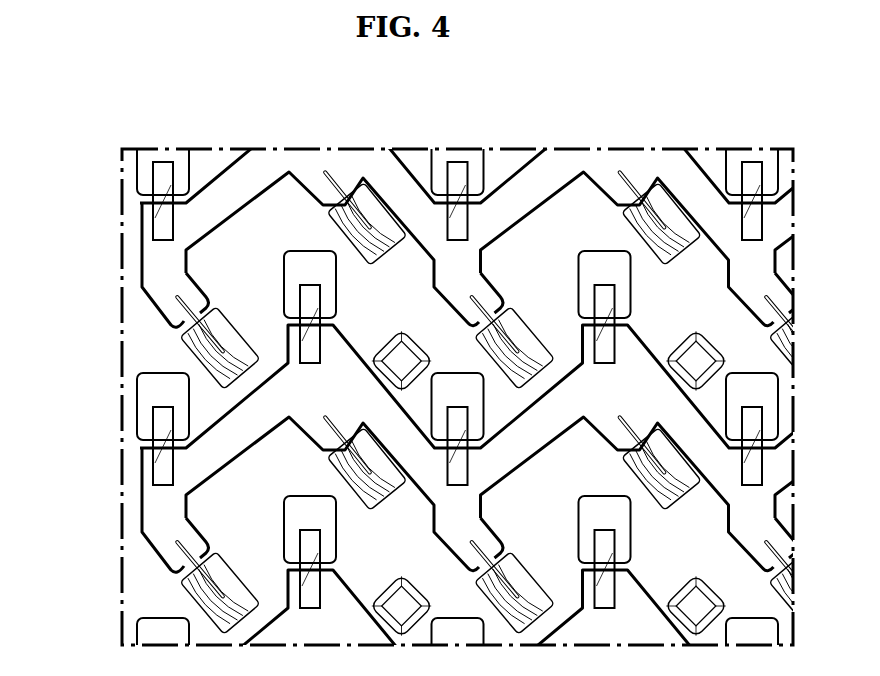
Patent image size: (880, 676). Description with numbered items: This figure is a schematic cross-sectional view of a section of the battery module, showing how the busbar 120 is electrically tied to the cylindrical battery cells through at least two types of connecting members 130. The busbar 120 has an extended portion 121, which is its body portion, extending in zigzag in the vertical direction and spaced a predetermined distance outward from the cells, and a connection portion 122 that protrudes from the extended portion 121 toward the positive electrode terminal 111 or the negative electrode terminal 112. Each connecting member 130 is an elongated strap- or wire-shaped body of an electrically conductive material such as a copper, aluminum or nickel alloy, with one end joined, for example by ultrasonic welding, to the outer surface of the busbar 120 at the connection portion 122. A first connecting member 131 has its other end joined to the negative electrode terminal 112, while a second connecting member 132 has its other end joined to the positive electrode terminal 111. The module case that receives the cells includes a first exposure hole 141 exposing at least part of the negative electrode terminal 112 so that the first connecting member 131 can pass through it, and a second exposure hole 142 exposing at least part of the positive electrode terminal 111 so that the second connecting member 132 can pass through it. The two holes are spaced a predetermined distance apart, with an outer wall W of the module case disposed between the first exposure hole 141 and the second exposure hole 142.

The positive electrode terminal 111 is at (152, 155).
The negative electrode terminal 112 is at (240, 353).
The busbar 120 is at (231, 182).
The extended portion 121 is at (222, 450).
The connection portion 122 is at (335, 352).
The connecting member 130 is at (113, 258).
The first connecting member 131 is at (180, 308).
The second connecting member 132 is at (157, 222).
The first exposure hole 141 is at (182, 358).
The second exposure hole 142 is at (138, 418).
The outer wall W is at (182, 365).